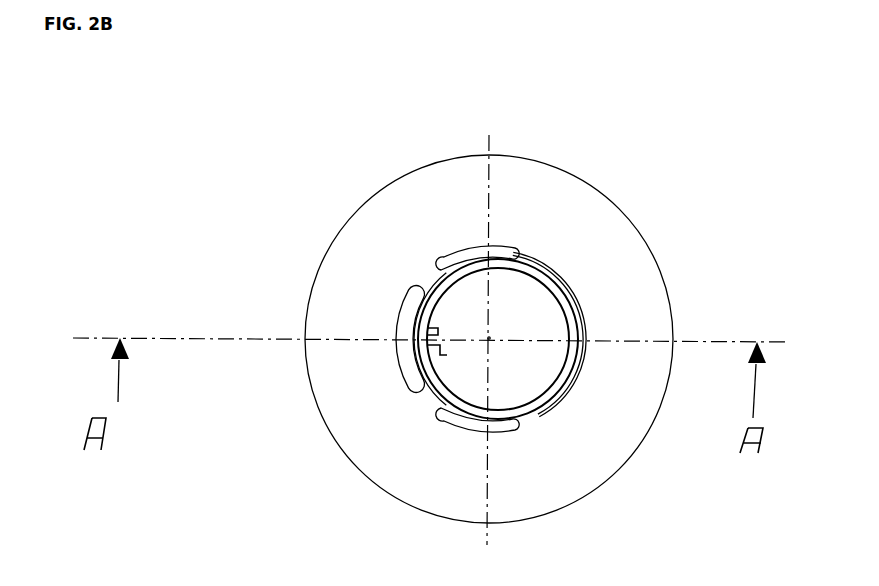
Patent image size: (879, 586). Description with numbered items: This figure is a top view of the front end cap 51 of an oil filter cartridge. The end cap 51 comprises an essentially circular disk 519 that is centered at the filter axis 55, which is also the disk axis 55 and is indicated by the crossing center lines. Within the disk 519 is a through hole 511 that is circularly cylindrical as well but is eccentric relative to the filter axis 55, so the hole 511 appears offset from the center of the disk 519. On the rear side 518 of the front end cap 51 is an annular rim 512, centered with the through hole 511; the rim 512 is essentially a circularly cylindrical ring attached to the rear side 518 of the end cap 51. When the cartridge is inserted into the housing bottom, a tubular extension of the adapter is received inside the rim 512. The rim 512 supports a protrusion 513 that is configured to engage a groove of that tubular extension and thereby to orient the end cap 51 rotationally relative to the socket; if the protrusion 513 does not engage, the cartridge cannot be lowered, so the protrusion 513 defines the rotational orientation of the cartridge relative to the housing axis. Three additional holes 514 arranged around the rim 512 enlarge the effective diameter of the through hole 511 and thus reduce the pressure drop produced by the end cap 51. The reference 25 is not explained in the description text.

The rotor assembly 25 is at (449, 321).
The front end cap 51 is at (488, 321).
The through hole 511 is at (600, 299).
The annular rim 512 is at (564, 400).
The protrusion 513 is at (466, 352).
The additional holes 514 is at (361, 366).
The rear side 518 is at (633, 327).
The circular disk 519 is at (489, 304).
The filter axis 55 is at (468, 315).